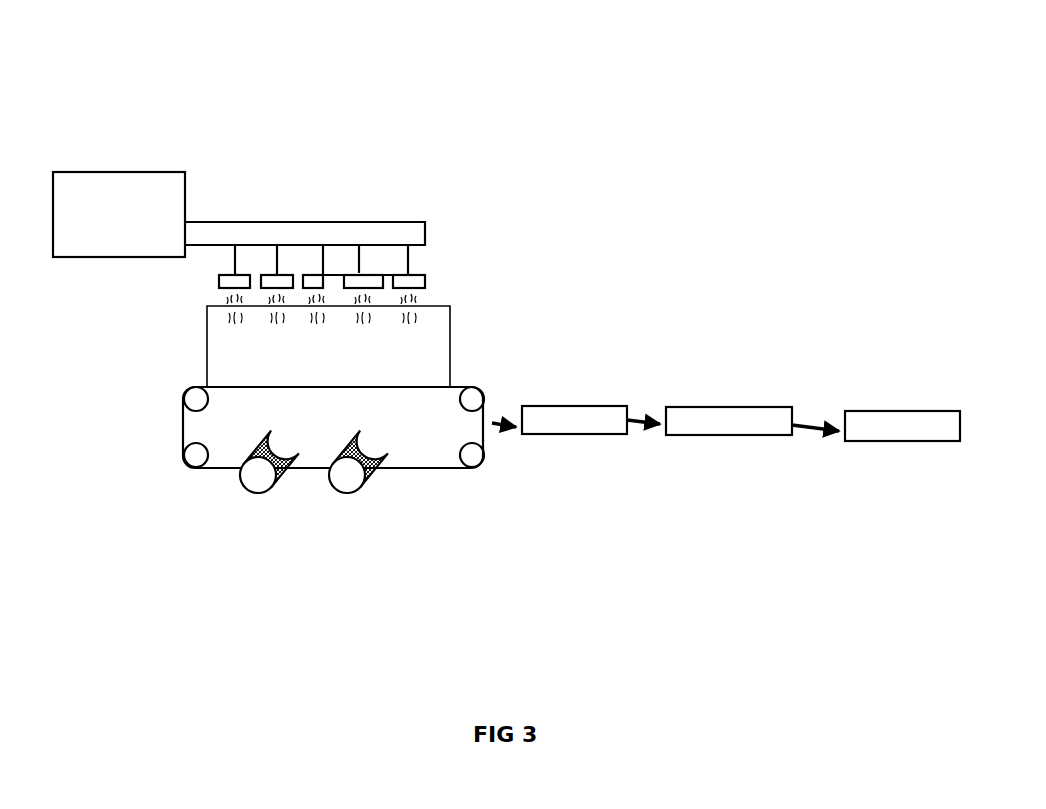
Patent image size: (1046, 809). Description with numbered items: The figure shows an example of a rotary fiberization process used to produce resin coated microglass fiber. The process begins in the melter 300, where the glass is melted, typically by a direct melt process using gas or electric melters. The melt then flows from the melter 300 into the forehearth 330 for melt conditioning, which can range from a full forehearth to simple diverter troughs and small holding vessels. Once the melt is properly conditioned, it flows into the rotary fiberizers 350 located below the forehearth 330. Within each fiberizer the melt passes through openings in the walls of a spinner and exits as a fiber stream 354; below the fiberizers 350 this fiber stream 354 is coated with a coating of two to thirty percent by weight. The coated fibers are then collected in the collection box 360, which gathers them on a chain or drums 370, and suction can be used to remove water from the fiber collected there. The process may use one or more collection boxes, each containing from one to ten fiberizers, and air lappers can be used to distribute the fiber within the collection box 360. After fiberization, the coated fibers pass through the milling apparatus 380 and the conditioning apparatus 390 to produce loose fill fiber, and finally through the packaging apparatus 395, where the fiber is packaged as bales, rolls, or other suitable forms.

The melter 300 is at (106, 158).
The forehearth 330 is at (314, 208).
The rotary fiberizers 350 is at (205, 290).
The fiber stream 354 is at (426, 300).
The collection box 360 is at (464, 343).
The chain or drums 370 is at (317, 485).
The milling apparatus 380 is at (584, 456).
The conditioning apparatus 390 is at (728, 456).
The packaging apparatus 395 is at (891, 458).